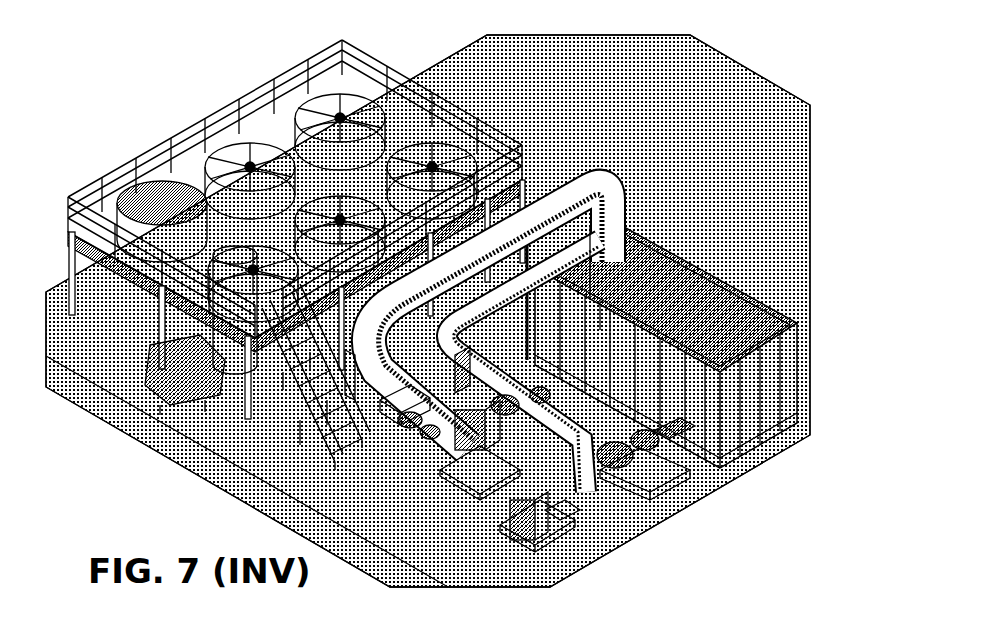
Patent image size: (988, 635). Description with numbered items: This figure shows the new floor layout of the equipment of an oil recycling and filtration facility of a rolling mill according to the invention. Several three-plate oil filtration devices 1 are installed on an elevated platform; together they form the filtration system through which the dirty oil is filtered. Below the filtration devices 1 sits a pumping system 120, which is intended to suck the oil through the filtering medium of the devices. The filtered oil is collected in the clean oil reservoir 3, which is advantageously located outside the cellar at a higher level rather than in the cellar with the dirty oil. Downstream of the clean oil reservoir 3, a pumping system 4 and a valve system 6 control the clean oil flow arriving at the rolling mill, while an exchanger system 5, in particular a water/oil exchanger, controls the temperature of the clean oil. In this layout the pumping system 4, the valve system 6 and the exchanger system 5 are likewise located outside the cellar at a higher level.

The oil filtration device 1 is at (360, 212).
The pumping system 120 is at (480, 215).
The clean oil reservoir 3 is at (683, 290).
The pumping system 4 is at (613, 432).
The exchanger system 5 is at (525, 545).
The valve system 6 is at (527, 262).